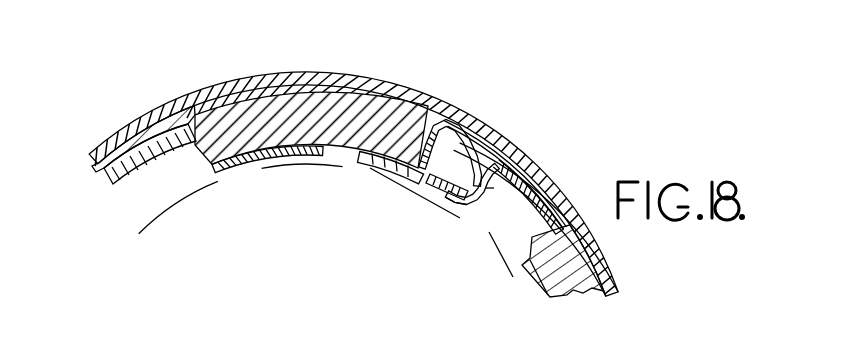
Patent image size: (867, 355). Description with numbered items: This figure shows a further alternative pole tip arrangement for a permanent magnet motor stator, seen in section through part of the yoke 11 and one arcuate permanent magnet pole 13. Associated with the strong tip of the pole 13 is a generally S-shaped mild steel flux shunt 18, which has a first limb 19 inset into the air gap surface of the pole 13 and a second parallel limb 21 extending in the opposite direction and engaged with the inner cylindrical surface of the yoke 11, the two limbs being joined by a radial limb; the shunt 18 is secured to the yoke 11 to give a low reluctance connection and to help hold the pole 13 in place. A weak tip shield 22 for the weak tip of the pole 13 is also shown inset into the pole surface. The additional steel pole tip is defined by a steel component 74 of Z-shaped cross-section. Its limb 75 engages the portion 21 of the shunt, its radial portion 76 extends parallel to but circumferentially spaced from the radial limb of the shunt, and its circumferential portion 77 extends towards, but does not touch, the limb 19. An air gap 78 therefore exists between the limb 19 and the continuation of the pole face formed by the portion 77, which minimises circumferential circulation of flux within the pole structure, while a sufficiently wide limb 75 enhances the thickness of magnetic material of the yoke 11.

The yoke 11 is at (267, 85).
The permanent magnet pole 13 is at (235, 125).
The flux shunt 18 is at (423, 130).
The first limb 19 is at (375, 158).
The second limb 21 is at (520, 158).
The weak tip shield 22 is at (250, 157).
The steel component 74 is at (490, 190).
The limb 75 is at (547, 180).
The radial portion 76 is at (476, 185).
The circumferential portion 77 is at (458, 178).
The air gap 78 is at (437, 177).